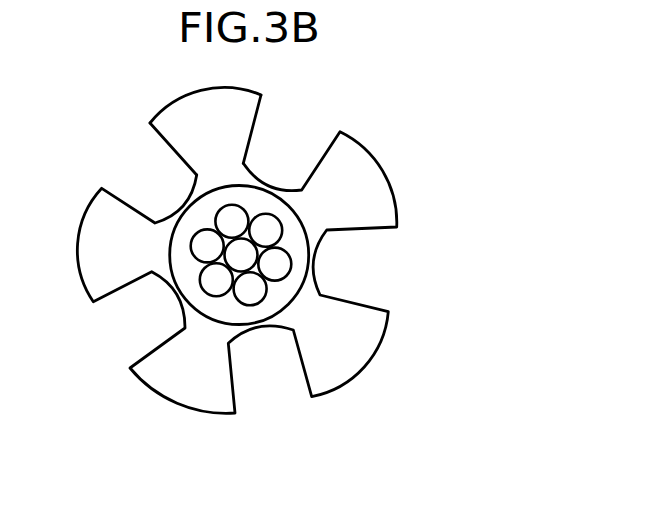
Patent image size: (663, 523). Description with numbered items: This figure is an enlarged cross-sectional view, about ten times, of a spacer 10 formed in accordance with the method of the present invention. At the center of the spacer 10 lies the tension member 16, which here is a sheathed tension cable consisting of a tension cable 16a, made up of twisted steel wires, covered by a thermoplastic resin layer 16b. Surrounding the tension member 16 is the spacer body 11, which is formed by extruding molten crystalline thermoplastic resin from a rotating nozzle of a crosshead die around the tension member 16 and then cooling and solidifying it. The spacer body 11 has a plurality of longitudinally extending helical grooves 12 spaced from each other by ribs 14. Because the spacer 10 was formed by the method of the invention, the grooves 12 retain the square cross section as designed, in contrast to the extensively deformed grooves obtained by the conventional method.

The spacer 10 is at (410, 205).
The spacer body 11 is at (244, 109).
The helical grooves 12 is at (244, 132).
The ribs 14 is at (200, 100).
The tension member 16 is at (304, 255).
The tension cable 16a is at (278, 257).
The thermoplastic resin layer 16b is at (298, 273).